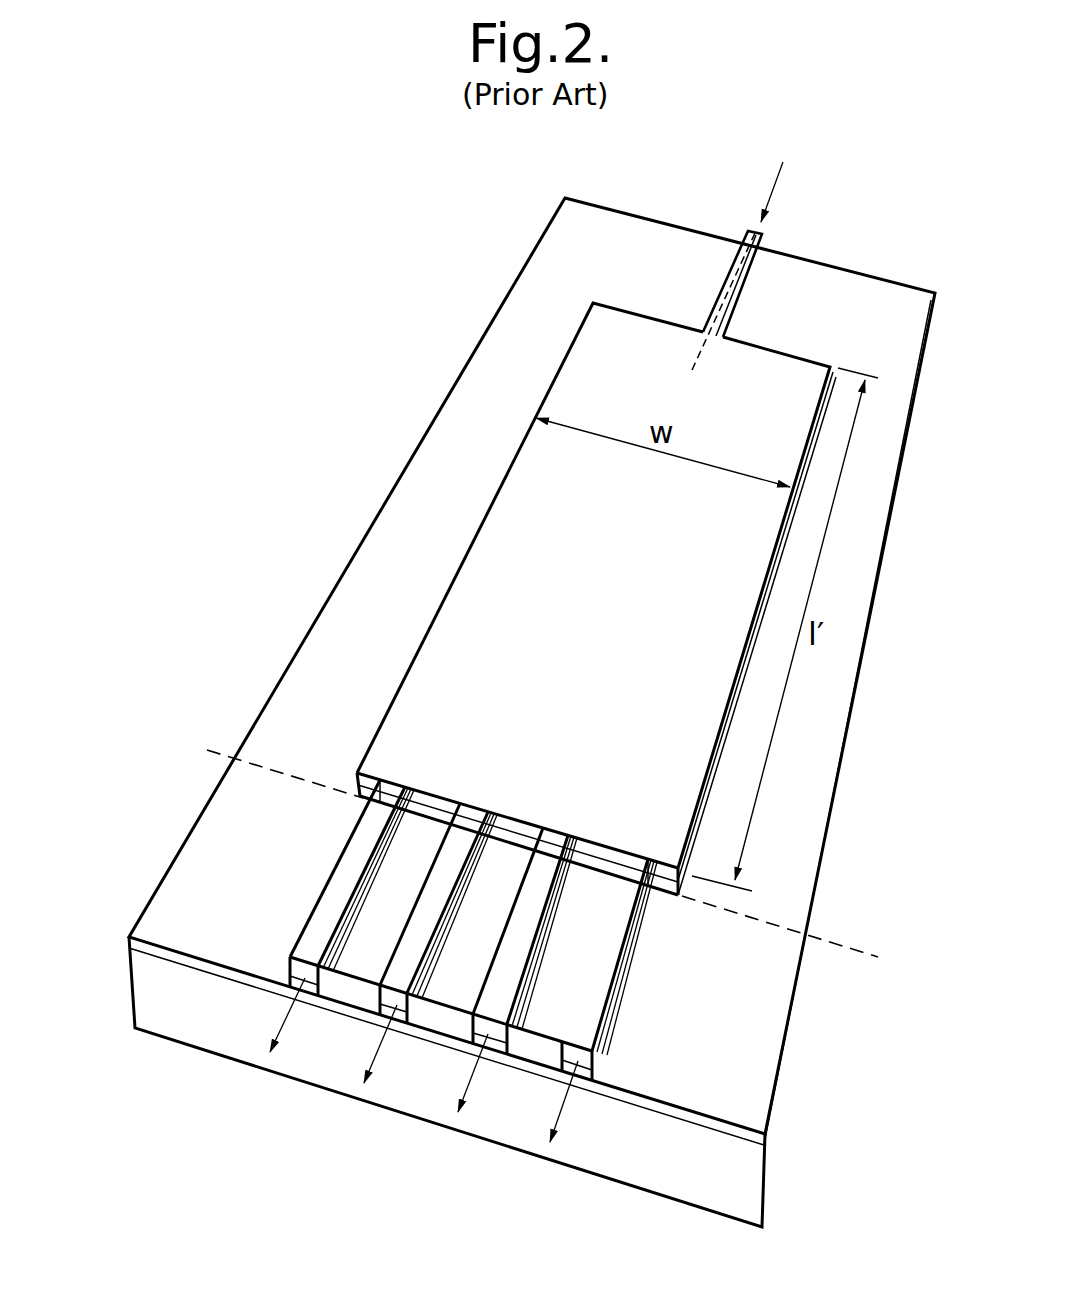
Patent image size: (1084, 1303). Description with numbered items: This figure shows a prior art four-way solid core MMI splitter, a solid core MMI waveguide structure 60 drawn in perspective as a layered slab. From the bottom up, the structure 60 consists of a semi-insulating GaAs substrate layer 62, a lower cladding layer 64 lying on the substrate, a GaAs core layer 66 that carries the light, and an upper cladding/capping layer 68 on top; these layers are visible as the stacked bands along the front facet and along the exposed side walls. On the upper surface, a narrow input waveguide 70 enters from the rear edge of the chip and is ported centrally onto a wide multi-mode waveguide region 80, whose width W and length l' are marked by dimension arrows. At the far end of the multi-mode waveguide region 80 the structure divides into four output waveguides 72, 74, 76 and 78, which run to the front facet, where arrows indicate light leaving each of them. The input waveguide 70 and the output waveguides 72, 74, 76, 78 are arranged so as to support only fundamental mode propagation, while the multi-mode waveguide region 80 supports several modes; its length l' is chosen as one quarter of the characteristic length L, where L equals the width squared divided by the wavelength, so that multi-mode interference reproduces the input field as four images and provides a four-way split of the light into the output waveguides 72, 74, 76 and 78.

The solid core MMI waveguide structure 60 is at (388, 378).
The semi-insulating GaAs substrate layer 62 is at (738, 1177).
The lower cladding layer 64 is at (752, 1140).
The GaAs core layer 66 is at (578, 1063).
The upper cladding/capping layer 68 is at (578, 1047).
The input waveguide 70 is at (735, 277).
The output waveguide 72 is at (287, 965).
The output waveguide 74 is at (378, 990).
The output waveguide 76 is at (470, 1020).
The output waveguide 78 is at (560, 1048).
The multi-mode waveguide region 80 is at (578, 368).